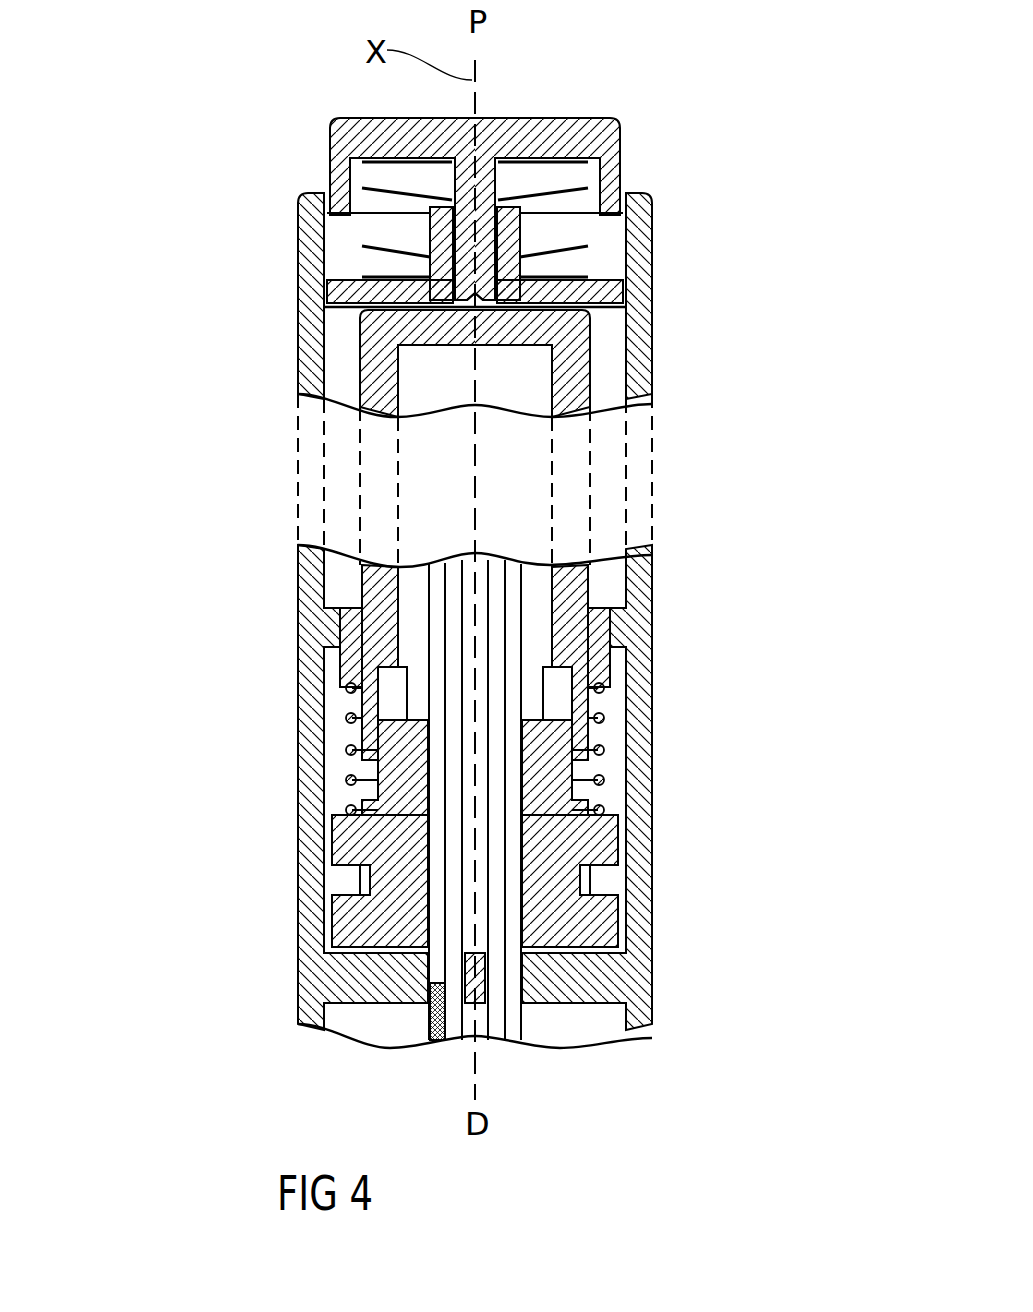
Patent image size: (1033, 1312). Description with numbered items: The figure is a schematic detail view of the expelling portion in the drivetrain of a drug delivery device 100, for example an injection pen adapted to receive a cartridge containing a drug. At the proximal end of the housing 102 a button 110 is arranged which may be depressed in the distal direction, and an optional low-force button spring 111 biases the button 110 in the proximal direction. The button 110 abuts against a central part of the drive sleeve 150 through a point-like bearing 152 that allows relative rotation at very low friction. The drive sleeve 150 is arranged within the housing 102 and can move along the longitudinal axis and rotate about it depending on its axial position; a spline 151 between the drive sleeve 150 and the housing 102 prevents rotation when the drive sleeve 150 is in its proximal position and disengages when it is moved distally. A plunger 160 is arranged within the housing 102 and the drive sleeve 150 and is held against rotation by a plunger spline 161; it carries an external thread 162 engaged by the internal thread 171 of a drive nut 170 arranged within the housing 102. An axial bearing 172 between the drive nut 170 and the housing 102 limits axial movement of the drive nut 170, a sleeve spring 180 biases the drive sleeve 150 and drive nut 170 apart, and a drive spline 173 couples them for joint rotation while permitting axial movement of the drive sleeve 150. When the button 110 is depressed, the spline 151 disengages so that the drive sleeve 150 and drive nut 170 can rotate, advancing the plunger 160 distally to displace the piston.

The drug delivery device 100 is at (245, 97).
The housing 102 is at (640, 335).
The button 110 is at (560, 123).
The low-force button spring 111 is at (568, 212).
The drive sleeve 150 is at (575, 400).
The spline 151 is at (600, 630).
The point-like bearing 152 is at (500, 300).
The plunger 160 is at (500, 710).
The plunger spline 161 is at (515, 1005).
The external thread 162 is at (435, 1010).
The drive nut 170 is at (565, 840).
The internal thread 171 is at (522, 922).
The axial bearing 172 is at (610, 878).
The drive spline 173 is at (380, 742).
The sleeve spring 180 is at (602, 763).